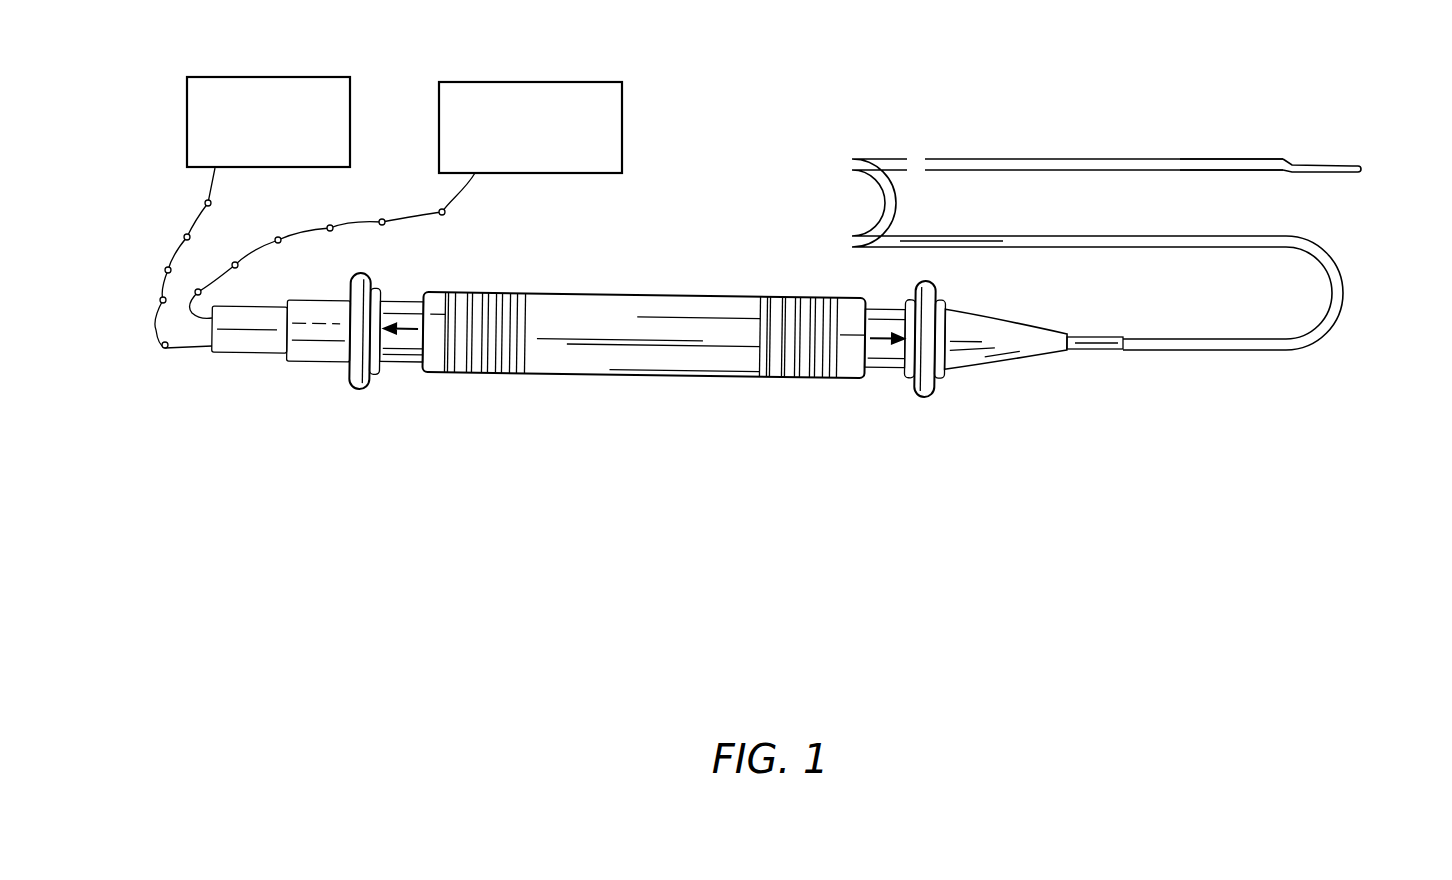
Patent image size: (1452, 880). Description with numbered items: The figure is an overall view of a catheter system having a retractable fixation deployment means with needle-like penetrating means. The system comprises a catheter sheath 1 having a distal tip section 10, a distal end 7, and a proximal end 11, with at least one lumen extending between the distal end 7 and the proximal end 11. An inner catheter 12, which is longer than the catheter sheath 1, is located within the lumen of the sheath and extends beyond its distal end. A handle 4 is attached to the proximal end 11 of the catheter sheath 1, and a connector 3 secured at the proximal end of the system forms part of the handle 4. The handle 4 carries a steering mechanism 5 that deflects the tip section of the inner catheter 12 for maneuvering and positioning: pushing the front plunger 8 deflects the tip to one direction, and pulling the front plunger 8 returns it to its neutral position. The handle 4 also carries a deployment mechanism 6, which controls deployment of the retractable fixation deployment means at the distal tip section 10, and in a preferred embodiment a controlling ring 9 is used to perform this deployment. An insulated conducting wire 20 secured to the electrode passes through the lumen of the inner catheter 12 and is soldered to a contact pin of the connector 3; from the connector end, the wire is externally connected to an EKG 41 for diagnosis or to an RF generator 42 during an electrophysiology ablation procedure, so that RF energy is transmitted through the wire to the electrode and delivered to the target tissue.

The catheter sheath 1 is at (1022, 146).
The connector 3 is at (238, 369).
The handle 4 is at (643, 394).
The steering mechanism 5 is at (863, 394).
The deployment mechanism 6 is at (398, 372).
The distal end 7 is at (1297, 156).
The front plunger 8 is at (908, 402).
The controlling ring 9 is at (340, 394).
The distal tip section 10 is at (1242, 156).
The proximal end 11 is at (1058, 354).
The inner catheter 12 is at (1365, 150).
The insulated conducting wire 20 is at (180, 259).
The EKG 41 is at (362, 91).
The RF generator 42 is at (632, 91).